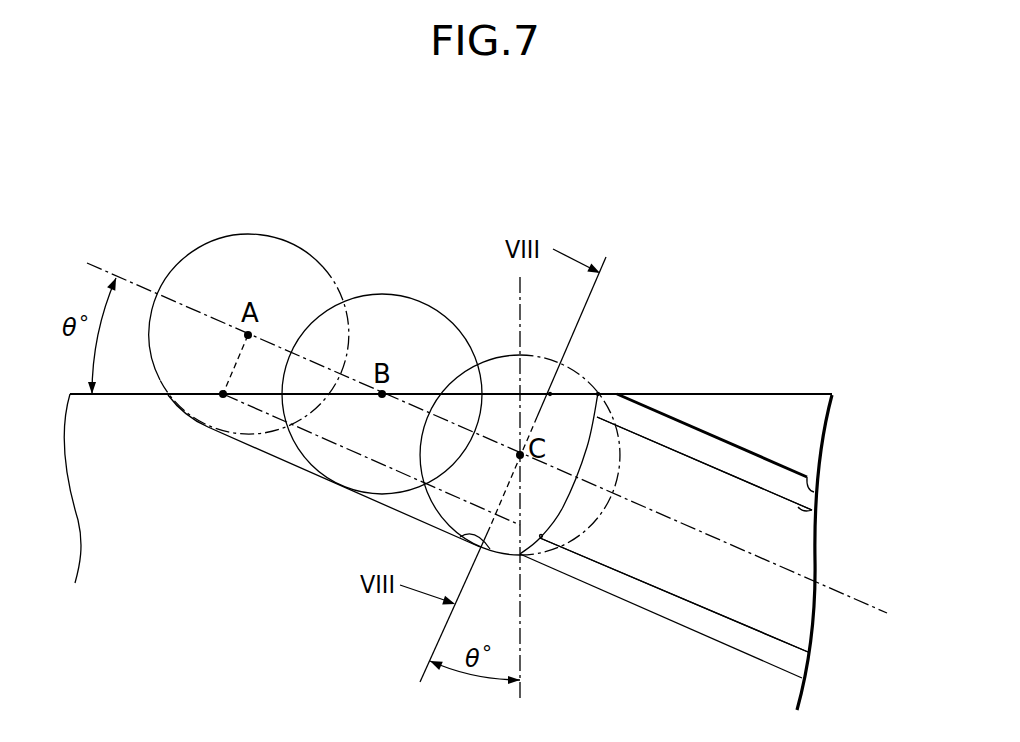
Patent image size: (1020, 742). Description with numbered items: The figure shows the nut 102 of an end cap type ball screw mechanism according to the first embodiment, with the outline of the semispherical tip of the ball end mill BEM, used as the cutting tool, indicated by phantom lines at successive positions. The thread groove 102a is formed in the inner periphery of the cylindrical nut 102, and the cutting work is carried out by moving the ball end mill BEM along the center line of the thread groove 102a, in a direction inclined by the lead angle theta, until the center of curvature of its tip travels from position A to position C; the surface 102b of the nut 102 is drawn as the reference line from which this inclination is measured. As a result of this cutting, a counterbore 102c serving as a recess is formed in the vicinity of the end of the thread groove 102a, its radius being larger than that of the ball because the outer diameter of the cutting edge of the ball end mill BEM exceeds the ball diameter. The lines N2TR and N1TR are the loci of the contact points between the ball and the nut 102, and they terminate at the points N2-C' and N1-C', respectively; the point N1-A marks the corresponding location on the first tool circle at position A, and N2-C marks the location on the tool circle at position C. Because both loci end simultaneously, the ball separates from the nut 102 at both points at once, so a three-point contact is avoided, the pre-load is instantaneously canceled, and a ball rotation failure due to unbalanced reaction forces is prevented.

The nut 102 is at (803, 437).
The thread groove 102a is at (810, 490).
The workpiece top surface 102b is at (763, 393).
The counterbore 102c is at (462, 540).
The ball end mill BEM is at (213, 240).
The N1 point at position A N1-A is at (223, 398).
The N2 point at position C N2-C is at (602, 354).
The termination point of line N2TR N2-C' is at (659, 375).
The termination point of line N1TR N1-C' is at (572, 584).
The line N1TR is at (700, 607).
The line N2TR is at (800, 507).